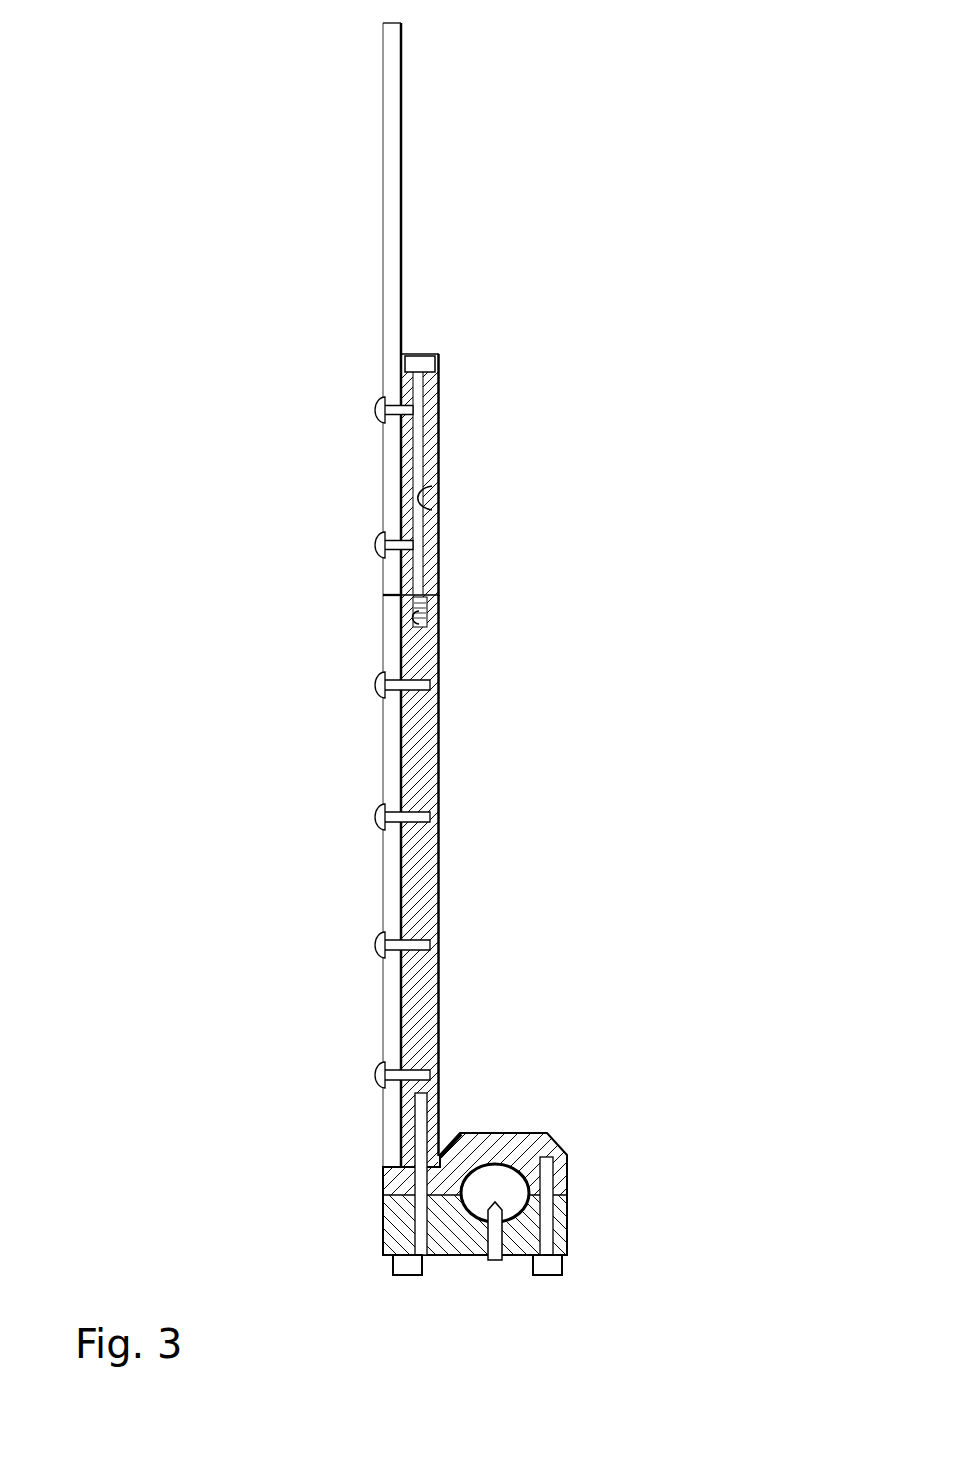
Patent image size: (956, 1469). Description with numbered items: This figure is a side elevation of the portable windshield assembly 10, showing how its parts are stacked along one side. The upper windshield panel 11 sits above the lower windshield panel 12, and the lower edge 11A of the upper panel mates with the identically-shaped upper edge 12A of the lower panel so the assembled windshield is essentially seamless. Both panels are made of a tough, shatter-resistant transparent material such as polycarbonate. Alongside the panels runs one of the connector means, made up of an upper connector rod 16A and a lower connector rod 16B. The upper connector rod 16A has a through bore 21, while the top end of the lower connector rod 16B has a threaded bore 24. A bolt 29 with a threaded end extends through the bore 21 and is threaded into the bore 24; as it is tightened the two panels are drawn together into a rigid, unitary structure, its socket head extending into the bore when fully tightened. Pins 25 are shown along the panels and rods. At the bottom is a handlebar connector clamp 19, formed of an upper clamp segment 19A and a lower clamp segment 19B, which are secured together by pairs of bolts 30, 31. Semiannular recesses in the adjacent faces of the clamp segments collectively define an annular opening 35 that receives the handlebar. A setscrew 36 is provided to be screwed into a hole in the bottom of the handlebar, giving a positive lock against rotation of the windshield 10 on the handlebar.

The portable windshield assembly 10 is at (272, 212).
The upper windshield panel 11 is at (395, 223).
The lower edge 11A is at (390, 594).
The lower windshield panel 12 is at (390, 893).
The upper edge 12A is at (390, 597).
The upper connector rod 16A is at (440, 464).
The lower connector rod 16B is at (434, 862).
The handlebar connector clamp 19 is at (567, 1217).
The upper clamp segment 19A is at (545, 1152).
The lower clamp segment 19B is at (440, 1250).
The through bore 21 is at (428, 508).
The threaded bore 24 is at (436, 627).
The pins 25 is at (380, 543).
The bolt 29 is at (432, 378).
The bolt 30 is at (560, 1265).
The bolt 31 is at (447, 1230).
The annular opening 35 is at (512, 1182).
The setscrew 36 is at (493, 1261).